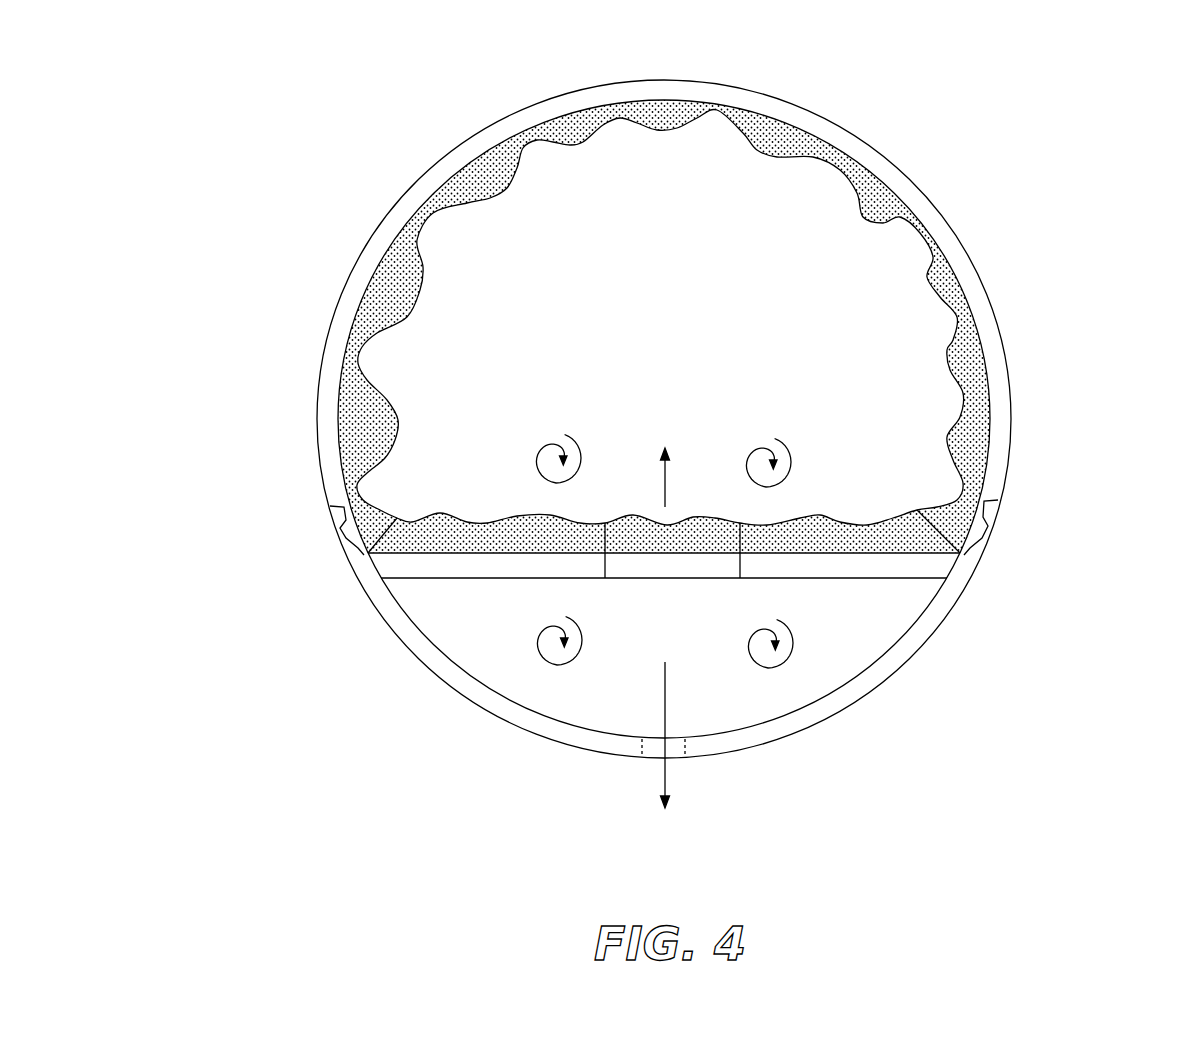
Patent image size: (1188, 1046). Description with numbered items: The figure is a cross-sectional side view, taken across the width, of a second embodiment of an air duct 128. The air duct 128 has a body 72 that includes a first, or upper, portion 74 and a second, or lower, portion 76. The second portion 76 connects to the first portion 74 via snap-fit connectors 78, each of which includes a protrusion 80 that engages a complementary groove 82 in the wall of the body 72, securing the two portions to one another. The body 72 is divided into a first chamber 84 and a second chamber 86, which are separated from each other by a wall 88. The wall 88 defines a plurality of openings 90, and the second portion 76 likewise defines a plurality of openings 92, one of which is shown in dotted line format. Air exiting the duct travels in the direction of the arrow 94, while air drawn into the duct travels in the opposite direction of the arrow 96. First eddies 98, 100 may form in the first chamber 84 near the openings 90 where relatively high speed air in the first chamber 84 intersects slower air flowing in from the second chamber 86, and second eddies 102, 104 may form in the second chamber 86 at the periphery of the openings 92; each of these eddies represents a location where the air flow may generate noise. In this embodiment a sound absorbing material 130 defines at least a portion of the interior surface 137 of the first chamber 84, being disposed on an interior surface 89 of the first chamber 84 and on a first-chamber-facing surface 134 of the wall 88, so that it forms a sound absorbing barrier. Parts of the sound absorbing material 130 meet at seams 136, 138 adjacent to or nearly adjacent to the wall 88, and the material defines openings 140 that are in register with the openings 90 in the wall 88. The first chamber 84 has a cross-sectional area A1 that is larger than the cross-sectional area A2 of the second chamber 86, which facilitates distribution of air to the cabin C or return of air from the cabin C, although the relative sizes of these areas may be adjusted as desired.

The body 72 is at (795, 103).
The first portion 74 is at (990, 325).
The second portion 76 is at (890, 685).
The snap-fit connector 78 is at (343, 545).
The protrusion 80 is at (344, 507).
The groove 82 is at (990, 497).
The first chamber 84 is at (662, 283).
The second chamber 86 is at (462, 648).
The wall 88 is at (836, 566).
The interior surface 89 is at (960, 270).
The openings 90 is at (696, 579).
The openings 92 is at (676, 760).
The arrow 94 is at (660, 784).
The arrow 96 is at (686, 457).
The first eddy 98 is at (786, 448).
The first eddy 100 is at (581, 440).
The second eddy 102 is at (758, 667).
The second eddy 104 is at (563, 665).
The air duct 128 is at (1050, 129).
The sound absorbing material 130 is at (776, 158).
The first-chamber-facing surface 134 is at (848, 547).
The seam 136 is at (933, 510).
The interior surface 137 is at (885, 220).
The seam 138 is at (392, 527).
The openings 140 is at (707, 530).
The cross-sectional area A1 is at (573, 158).
The cross-sectional area A2 is at (420, 607).
The cabin C is at (430, 847).